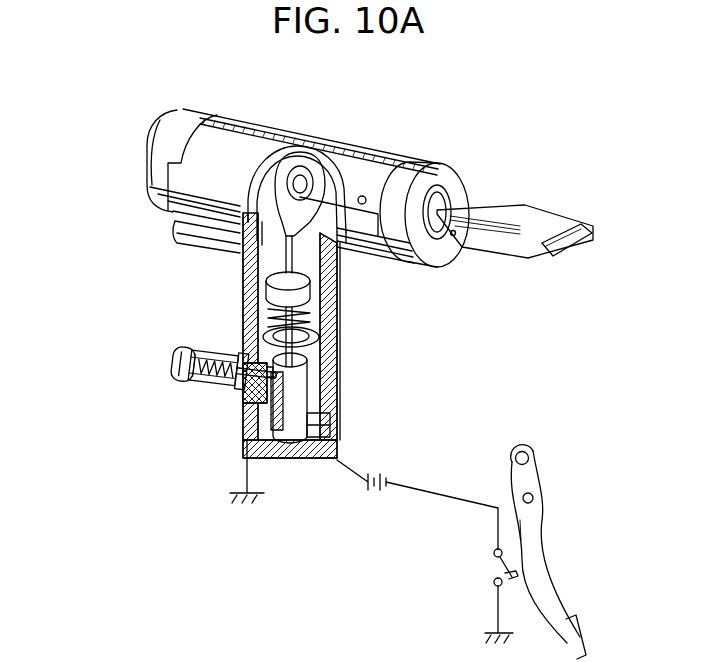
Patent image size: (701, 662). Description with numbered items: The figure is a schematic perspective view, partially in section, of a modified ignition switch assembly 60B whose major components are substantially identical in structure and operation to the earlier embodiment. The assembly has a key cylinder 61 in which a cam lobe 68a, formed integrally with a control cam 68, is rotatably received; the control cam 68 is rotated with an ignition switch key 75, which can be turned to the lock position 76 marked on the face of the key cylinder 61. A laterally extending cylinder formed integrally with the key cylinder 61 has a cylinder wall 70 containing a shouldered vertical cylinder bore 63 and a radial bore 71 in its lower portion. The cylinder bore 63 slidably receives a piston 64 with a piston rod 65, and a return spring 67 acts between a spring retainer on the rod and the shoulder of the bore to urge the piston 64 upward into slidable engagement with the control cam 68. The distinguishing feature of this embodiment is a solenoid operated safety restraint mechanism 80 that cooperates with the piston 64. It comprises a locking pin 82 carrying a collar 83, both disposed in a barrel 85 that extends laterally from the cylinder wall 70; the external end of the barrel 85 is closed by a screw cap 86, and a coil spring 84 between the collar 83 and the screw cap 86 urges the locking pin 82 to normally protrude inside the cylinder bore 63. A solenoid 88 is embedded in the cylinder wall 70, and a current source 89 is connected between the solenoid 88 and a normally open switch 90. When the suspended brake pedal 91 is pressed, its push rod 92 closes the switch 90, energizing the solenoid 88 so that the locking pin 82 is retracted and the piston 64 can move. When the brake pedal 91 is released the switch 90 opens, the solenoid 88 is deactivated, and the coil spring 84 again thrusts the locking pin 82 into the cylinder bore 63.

The modified ignition switch assembly 60B is at (388, 130).
The key cylinder 61 is at (261, 124).
The cylinder bore 63 is at (315, 257).
The piston 64 is at (295, 390).
The piston rod 65 is at (290, 322).
The return spring 67 is at (298, 307).
The control cam 68 is at (304, 166).
The cam lobe 68a is at (267, 200).
The cylinder wall 70 is at (240, 257).
The radial bore 71 is at (320, 432).
The ignition switch key 75 is at (544, 217).
The lock position 76 is at (439, 184).
The solenoid operated safety restraint mechanism 80 is at (187, 387).
The locking pin 82 is at (256, 373).
The collar 83 is at (241, 371).
The coil spring 84 is at (213, 368).
The barrel 85 is at (215, 368).
The screw cap 86 is at (183, 364).
The solenoid 88 is at (243, 325).
The current source 89 is at (375, 494).
The normally open switch 90 is at (489, 589).
The suspended brake pedal 91 is at (534, 555).
The push rod 92 is at (508, 574).